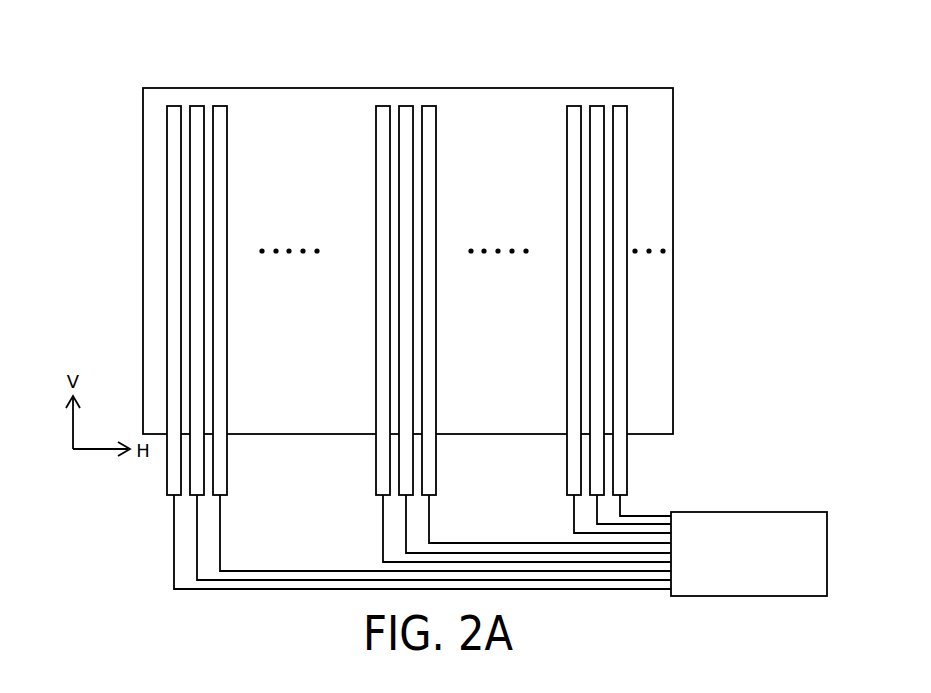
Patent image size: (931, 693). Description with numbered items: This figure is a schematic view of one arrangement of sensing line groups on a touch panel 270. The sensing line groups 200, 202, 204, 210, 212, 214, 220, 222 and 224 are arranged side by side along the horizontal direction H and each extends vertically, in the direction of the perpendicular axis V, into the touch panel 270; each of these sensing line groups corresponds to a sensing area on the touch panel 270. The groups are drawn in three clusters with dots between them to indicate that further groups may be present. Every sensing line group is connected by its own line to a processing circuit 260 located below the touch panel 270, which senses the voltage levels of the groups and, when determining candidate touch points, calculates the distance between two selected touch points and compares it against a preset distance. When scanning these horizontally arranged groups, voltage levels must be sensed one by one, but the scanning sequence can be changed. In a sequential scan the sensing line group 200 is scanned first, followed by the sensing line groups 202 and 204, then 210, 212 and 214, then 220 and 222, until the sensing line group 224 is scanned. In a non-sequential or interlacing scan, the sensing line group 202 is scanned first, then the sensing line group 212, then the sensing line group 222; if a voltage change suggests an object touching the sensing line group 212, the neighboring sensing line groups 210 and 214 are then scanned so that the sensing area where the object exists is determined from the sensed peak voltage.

The sensing line group 200 is at (174, 106).
The sensing line group 202 is at (198, 106).
The sensing line group 204 is at (219, 106).
The sensing line group 210 is at (383, 106).
The sensing line group 212 is at (407, 106).
The sensing line group 214 is at (428, 106).
The sensing line group 220 is at (574, 106).
The sensing line group 222 is at (598, 106).
The sensing line group 224 is at (619, 106).
The processing circuit 260 is at (747, 596).
The touch panel 270 is at (673, 150).